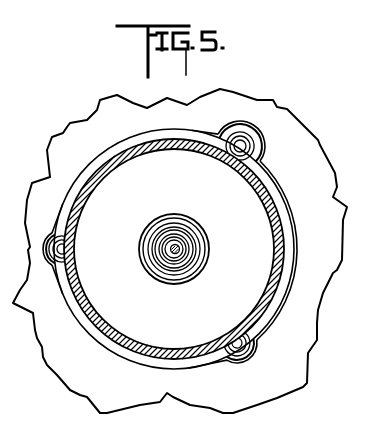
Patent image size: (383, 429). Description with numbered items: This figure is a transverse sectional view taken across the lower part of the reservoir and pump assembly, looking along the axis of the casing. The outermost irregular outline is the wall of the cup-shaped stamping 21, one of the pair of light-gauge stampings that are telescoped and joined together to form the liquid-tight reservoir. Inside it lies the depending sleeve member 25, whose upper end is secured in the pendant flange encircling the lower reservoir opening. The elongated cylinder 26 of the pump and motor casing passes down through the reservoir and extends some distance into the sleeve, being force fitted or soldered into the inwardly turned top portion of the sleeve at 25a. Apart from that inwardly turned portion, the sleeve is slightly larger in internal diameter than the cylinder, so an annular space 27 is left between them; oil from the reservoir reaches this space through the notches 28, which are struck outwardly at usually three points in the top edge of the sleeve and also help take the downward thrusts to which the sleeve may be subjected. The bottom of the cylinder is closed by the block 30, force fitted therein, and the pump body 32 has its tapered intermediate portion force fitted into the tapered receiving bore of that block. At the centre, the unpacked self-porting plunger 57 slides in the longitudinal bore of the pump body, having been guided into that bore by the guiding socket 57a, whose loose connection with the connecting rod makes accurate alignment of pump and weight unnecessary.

The cup-shaped stamping 21 is at (37, 342).
The sleeve member 25 is at (149, 128).
The inwardly turned upper end of the sleeve 25a is at (100, 168).
The cylinder 26 is at (233, 165).
The annular space 27 is at (45, 249).
The notches 28 is at (45, 249).
The block 30 is at (268, 240).
The pump body 32 is at (188, 276).
The plunger 57 is at (179, 246).
The guiding socket 57a is at (186, 252).